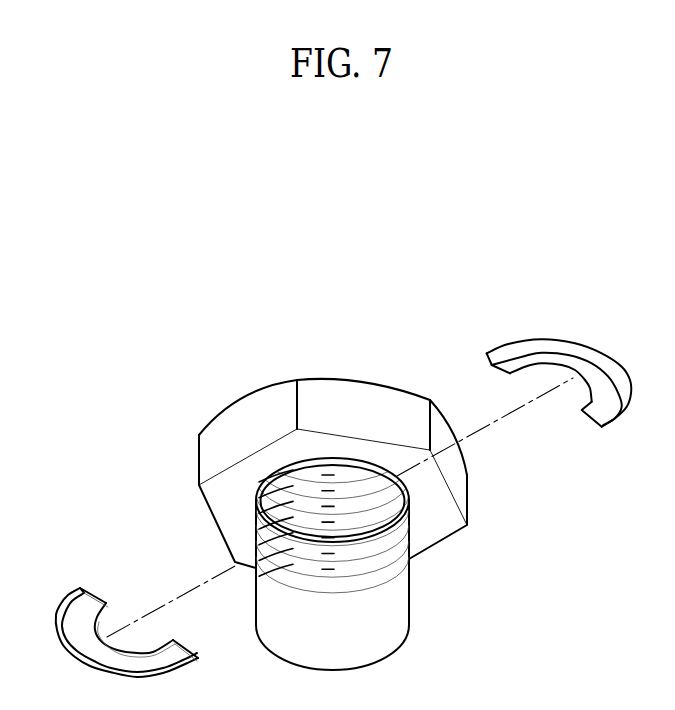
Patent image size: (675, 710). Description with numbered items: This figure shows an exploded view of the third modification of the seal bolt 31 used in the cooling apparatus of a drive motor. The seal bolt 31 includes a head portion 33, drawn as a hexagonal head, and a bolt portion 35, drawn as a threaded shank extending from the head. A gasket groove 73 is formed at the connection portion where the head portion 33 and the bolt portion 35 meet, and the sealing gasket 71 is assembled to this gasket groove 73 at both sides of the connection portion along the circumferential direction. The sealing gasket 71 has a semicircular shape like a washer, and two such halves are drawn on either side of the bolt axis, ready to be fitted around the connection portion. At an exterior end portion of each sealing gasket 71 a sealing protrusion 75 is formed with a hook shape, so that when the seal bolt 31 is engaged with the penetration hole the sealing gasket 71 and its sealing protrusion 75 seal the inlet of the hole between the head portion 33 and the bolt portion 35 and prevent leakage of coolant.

The seal bolt 31 is at (260, 303).
The head portion 33 is at (220, 420).
The bolt portion 35 is at (305, 500).
The gasket groove 73 is at (347, 463).
The sealing gasket 71 is at (590, 412).
The sealing protrusion 75 is at (600, 427).